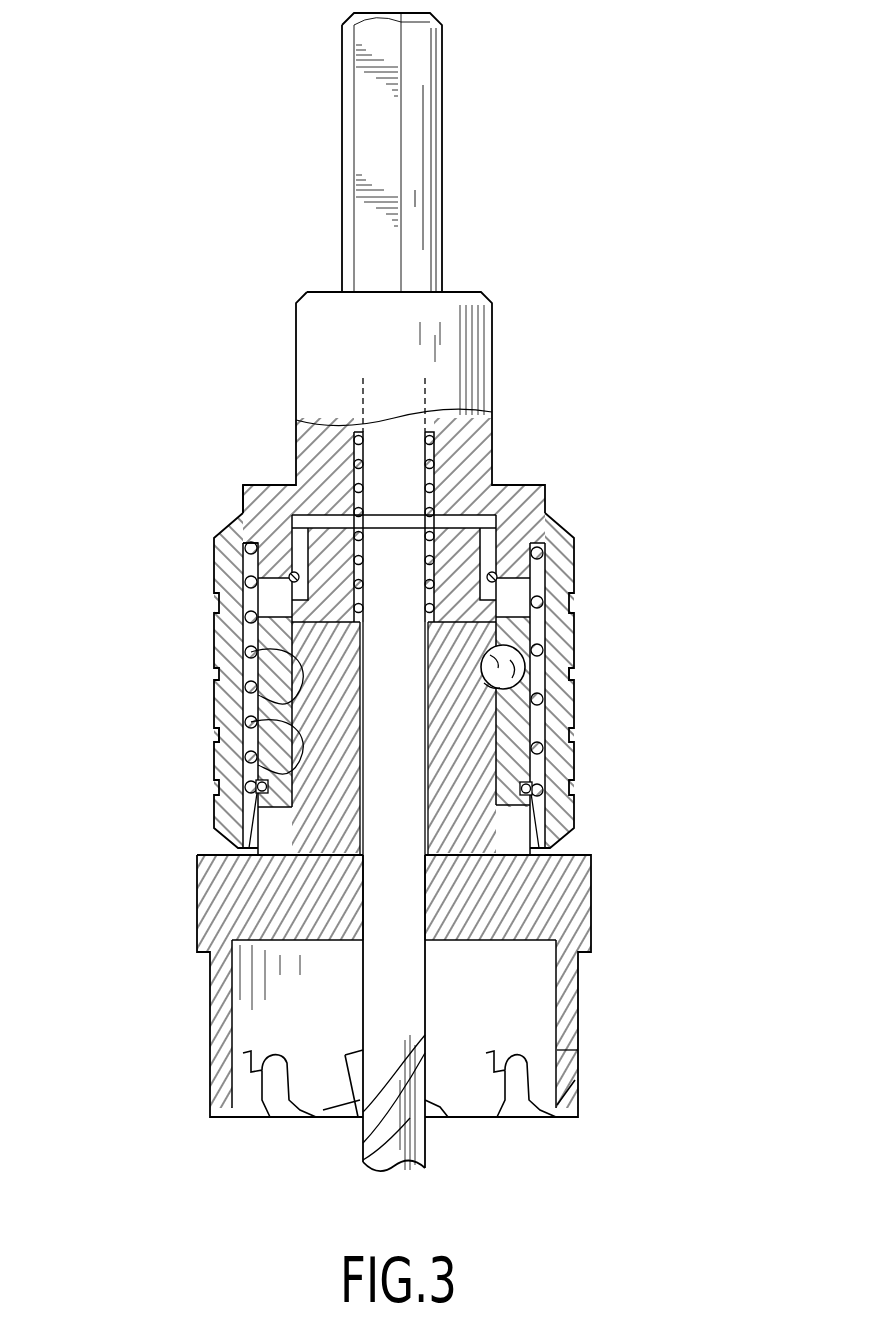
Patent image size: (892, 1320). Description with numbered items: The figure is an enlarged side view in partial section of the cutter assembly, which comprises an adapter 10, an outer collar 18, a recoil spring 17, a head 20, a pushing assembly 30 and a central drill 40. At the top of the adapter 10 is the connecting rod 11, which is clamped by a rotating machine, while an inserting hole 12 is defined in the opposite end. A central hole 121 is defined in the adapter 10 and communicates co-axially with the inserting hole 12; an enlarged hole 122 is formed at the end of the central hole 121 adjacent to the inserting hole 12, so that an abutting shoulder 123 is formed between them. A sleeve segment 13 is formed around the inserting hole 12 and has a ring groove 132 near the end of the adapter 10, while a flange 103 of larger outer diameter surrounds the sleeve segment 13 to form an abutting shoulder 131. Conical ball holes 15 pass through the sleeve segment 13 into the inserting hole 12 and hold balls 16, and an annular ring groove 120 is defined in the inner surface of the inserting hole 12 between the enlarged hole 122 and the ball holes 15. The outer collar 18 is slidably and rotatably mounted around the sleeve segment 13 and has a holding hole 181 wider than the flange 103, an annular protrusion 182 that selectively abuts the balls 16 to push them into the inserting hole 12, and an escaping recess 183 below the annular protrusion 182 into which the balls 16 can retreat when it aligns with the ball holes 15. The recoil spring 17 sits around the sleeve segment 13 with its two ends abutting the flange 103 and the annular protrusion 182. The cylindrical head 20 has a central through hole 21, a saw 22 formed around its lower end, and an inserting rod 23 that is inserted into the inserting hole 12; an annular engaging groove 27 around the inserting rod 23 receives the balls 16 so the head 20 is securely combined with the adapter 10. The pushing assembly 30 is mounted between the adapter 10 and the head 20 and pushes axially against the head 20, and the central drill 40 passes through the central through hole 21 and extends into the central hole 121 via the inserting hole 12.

The adapter 10 is at (268, 276).
The connecting rod 11 is at (343, 148).
The inserting hole 12 is at (300, 742).
The sleeve segment 13 is at (262, 692).
The ball holes 15 is at (488, 662).
The balls 16 is at (490, 682).
The recoil spring 17 is at (252, 614).
The outer collar 18 is at (580, 821).
The head 20 is at (160, 990).
The central through hole 21 is at (430, 920).
The saw 22 is at (575, 1022).
The inserting rod 23 is at (500, 760).
The annular engaging groove 27 is at (300, 662).
The pushing assembly 30 is at (292, 513).
The central drill 40 is at (356, 1001).
The flange 103 is at (243, 505).
The annular ring groove 120 is at (497, 585).
The central hole 121 is at (423, 412).
The enlarged hole 122 is at (430, 478).
The abutting shoulder 123 is at (430, 445).
The abutting shoulder 131 is at (250, 558).
The ring groove 132 is at (257, 790).
The holding hole 181 is at (535, 565).
The annular protrusion 182 is at (528, 672).
The escaping recess 183 is at (252, 716).